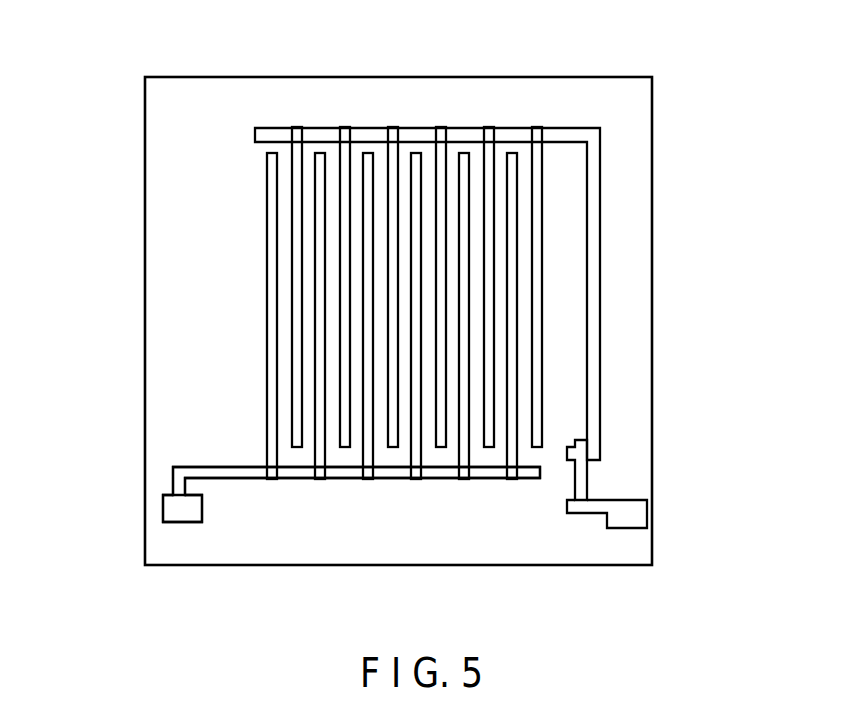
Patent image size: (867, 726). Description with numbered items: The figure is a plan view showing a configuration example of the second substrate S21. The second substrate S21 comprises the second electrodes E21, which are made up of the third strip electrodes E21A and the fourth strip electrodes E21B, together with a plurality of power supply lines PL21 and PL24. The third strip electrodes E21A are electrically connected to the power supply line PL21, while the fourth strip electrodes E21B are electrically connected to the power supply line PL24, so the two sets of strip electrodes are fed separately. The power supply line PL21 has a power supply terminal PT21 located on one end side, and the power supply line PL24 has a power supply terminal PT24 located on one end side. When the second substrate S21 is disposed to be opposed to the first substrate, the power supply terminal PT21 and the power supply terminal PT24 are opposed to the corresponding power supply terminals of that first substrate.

The second substrate S21 is at (236, 568).
The second electrodes E21 is at (381, 325).
The third strip electrodes E21A is at (515, 128).
The fourth strip electrodes E21B is at (510, 478).
The power supply line PL24 is at (241, 474).
The power supply terminal PT24 is at (165, 511).
The power supply line PL21 is at (590, 418).
The power supply terminal PT21 is at (623, 522).